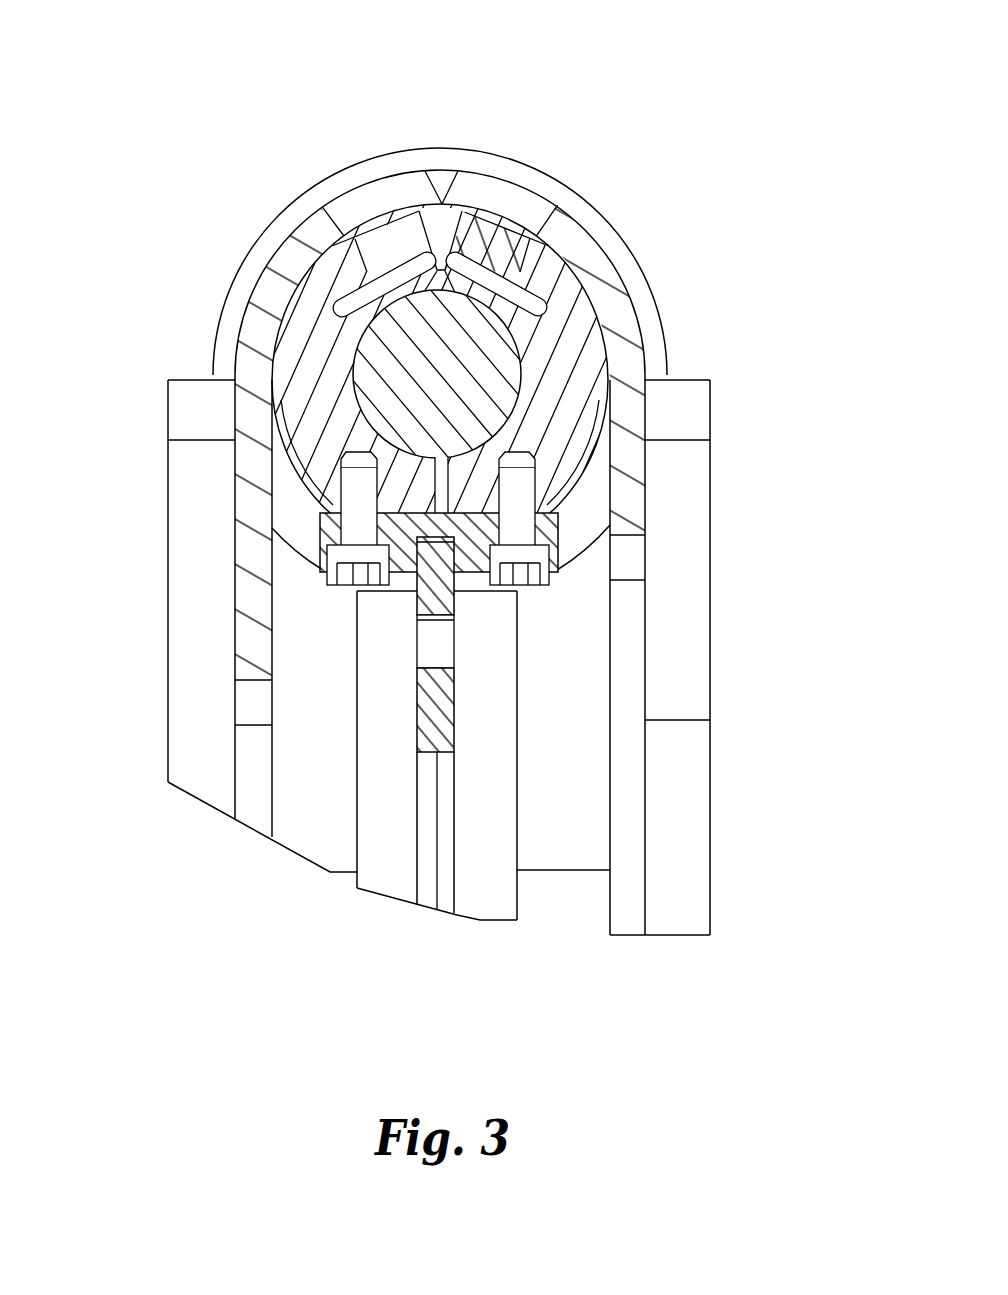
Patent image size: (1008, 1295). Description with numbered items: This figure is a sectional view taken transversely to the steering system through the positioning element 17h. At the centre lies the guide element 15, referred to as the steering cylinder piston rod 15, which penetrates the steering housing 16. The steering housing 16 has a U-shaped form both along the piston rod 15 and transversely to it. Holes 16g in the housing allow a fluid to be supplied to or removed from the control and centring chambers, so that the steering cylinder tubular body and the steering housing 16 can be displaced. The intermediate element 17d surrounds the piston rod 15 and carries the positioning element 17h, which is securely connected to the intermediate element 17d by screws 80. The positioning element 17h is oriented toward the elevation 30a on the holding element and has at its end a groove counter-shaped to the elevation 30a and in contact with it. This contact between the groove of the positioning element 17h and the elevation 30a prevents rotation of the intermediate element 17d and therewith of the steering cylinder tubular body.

The guide element (steering cylinder piston rod) 15 is at (387, 370).
The steering housing 16 is at (612, 284).
The holes 16g is at (380, 192).
The intermediate element 17d is at (572, 370).
The positioning element 17h is at (545, 525).
The screws 80 is at (358, 507).
The elevation 30a is at (418, 572).